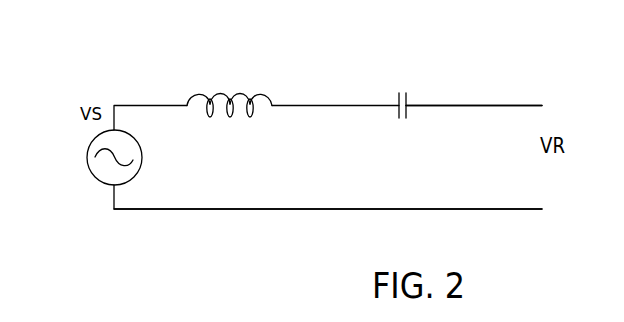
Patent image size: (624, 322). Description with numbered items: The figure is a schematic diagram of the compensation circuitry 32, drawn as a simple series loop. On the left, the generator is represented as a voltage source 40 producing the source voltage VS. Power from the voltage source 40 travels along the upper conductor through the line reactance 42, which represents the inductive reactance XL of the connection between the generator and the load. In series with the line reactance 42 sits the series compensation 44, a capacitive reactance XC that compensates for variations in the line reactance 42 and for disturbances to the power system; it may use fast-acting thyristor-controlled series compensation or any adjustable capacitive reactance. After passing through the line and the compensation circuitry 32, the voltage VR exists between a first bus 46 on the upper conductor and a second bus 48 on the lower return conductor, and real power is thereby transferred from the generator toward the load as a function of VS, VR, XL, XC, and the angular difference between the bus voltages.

The compensation circuitry 32 is at (277, 252).
The voltage source 40 is at (87, 152).
The line reactance 42 is at (240, 92).
The series compensation 44 is at (407, 95).
The first bus 46 is at (475, 106).
The second bus 48 is at (448, 210).